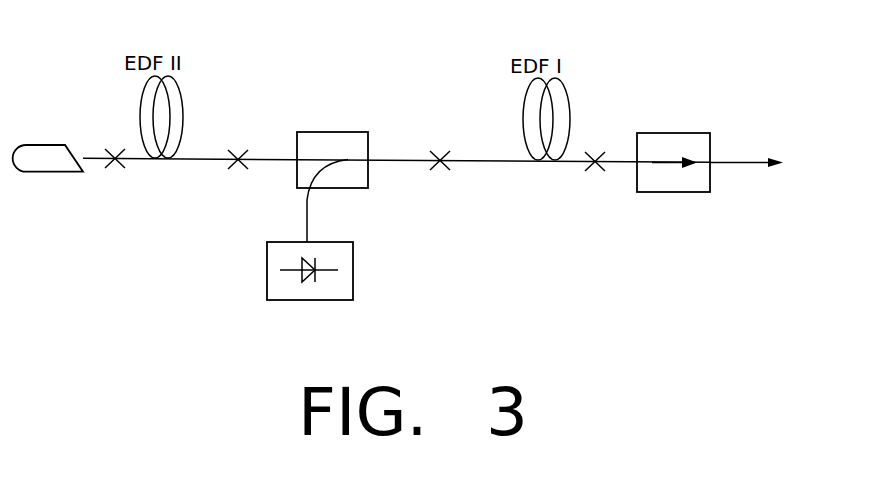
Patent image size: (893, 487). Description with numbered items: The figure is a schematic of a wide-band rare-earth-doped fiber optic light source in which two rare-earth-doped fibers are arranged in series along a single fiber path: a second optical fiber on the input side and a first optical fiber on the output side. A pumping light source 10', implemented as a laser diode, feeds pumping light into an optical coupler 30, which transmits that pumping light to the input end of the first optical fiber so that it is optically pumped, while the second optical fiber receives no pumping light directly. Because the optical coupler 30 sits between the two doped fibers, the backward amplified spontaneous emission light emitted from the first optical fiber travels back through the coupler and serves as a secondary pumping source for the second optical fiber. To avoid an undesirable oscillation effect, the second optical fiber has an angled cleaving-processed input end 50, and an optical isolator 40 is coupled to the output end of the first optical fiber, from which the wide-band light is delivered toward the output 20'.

The angled cleaving-processed input end 50 is at (47, 145).
The optical coupler 30 is at (336, 132).
The optical isolator 40 is at (677, 133).
The amplified output signal 20' is at (774, 168).
The pumping light source 10' is at (370, 262).